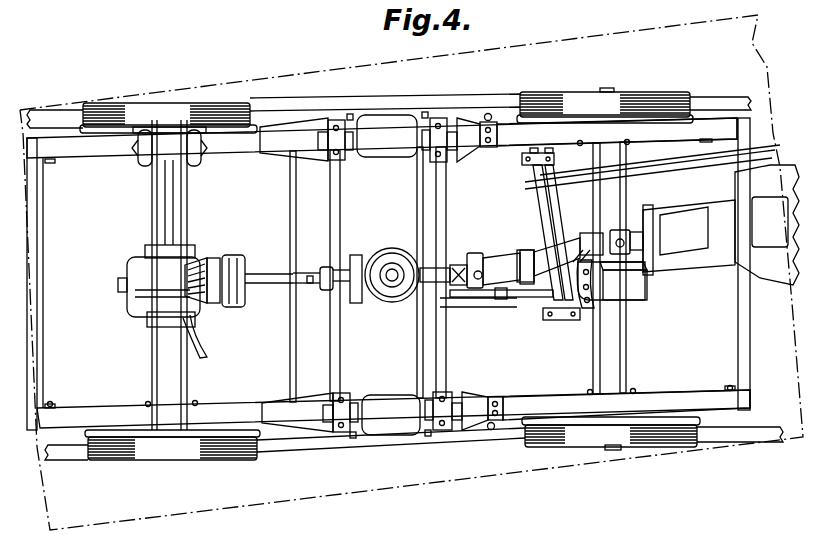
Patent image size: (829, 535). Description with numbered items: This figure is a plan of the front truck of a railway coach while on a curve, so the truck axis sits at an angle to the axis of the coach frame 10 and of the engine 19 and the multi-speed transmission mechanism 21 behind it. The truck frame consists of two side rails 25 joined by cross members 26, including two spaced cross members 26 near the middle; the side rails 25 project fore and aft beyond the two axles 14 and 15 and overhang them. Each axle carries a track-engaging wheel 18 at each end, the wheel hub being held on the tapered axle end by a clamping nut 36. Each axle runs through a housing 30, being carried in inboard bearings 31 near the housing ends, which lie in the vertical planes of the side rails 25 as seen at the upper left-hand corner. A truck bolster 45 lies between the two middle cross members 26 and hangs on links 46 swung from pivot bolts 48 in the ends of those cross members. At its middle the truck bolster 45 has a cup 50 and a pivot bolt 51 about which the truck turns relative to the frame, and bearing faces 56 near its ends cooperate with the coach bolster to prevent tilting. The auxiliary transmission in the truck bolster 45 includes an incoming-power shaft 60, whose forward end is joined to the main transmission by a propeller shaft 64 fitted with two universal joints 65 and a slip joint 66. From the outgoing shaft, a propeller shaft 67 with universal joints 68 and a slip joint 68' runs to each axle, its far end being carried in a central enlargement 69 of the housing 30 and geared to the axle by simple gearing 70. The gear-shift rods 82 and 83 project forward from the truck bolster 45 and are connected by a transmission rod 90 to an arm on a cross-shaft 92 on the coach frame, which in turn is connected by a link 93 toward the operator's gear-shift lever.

The coach frame 10 is at (633, 33).
The axle 14 is at (600, 88).
The axle 15 is at (172, 102).
The track-engaging wheel 18 is at (240, 100).
The engine 19 is at (778, 278).
The multi-speed transmission mechanism 21 is at (705, 264).
The side rail 25 is at (106, 168).
The cross member 26 is at (57, 365).
The axle housing 30 is at (186, 205).
The bearing 31 is at (128, 170).
The clamping nut 36 is at (622, 451).
The truck bolster 45 is at (410, 210).
The link 46 is at (348, 117).
The pivot bolt 48 is at (466, 130).
The cup 50 is at (398, 302).
The pivot bolt 51 is at (385, 272).
The bearing face 56 is at (390, 133).
The incoming-power shaft 60 is at (459, 262).
The propeller shaft 64 is at (524, 250).
The universal joint 65 is at (481, 256).
The slip joint 66 is at (510, 262).
The propeller shaft 67 is at (264, 270).
The universal joint 68 is at (400, 280).
The slip joint 68' is at (321, 302).
The central enlargement 69 is at (208, 258).
The gearing 70 is at (200, 335).
The shift rod 82 is at (479, 302).
The shift rod 83 is at (461, 306).
The transmission rod 90 is at (512, 300).
The cross-shaft 92 is at (569, 322).
The link 93 is at (694, 166).